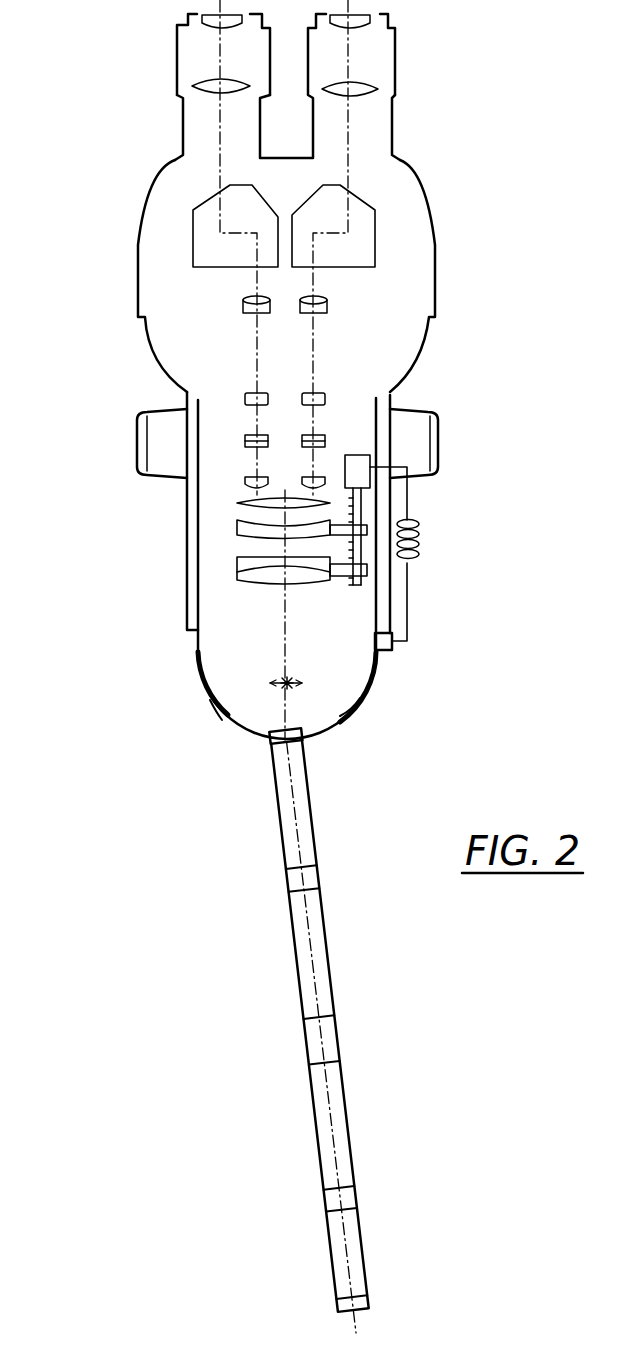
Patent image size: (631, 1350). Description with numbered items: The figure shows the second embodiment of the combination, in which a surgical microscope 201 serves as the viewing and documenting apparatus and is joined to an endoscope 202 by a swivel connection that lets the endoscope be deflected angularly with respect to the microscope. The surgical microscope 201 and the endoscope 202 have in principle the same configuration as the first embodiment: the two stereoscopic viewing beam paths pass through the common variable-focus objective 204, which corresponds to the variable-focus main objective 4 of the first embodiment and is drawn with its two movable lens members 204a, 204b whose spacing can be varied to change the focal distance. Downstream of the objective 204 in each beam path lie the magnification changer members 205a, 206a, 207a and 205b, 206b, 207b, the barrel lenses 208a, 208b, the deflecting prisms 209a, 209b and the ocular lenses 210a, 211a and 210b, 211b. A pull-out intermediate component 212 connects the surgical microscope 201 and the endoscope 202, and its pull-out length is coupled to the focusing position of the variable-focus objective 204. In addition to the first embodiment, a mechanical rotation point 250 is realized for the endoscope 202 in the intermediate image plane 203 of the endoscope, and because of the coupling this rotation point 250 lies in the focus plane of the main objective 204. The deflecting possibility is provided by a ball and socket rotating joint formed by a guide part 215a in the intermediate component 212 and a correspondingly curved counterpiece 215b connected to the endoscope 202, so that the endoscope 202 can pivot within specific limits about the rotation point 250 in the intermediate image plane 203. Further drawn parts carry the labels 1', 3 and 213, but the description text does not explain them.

The actuator / drive unit 1' is at (416, 548).
The upper housing 3 is at (471, 287).
The main objective 4 is at (413, 65).
The surgical microscope 201 is at (438, 350).
The endoscope 202 is at (276, 992).
The intermediate image plane 203 is at (270, 683).
The variable-focus objective 204 is at (95, 503).
The lens 204a is at (237, 568).
The lens 204b is at (237, 525).
The lens 205a is at (325, 397).
The lens 205b is at (245, 397).
The lens 206a is at (324, 438).
The lens 206b is at (243, 437).
The lens 207a is at (325, 478).
The lens 207b is at (245, 480).
The lens element 208a is at (329, 306).
The lens element 208b is at (243, 305).
The prism 209a is at (360, 238).
The prism 209b is at (203, 235).
The eyepiece lens 210a is at (367, 90).
The eyepiece lens 210b is at (214, 82).
The eyepiece lens 211a is at (370, 26).
The eyepiece lens 211b is at (202, 21).
The pull-out intermediate component 212 is at (198, 636).
The coil spring 213 is at (420, 556).
The guide part 215a is at (193, 683).
The curved counterpiece 215b is at (237, 732).
The mechanical rotation point 250 is at (290, 678).